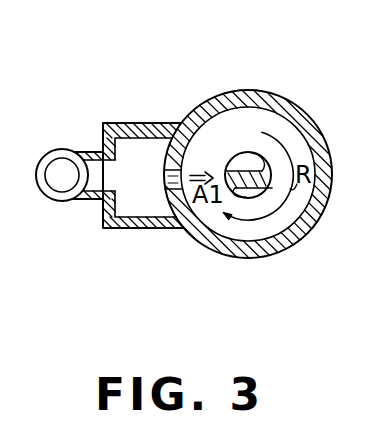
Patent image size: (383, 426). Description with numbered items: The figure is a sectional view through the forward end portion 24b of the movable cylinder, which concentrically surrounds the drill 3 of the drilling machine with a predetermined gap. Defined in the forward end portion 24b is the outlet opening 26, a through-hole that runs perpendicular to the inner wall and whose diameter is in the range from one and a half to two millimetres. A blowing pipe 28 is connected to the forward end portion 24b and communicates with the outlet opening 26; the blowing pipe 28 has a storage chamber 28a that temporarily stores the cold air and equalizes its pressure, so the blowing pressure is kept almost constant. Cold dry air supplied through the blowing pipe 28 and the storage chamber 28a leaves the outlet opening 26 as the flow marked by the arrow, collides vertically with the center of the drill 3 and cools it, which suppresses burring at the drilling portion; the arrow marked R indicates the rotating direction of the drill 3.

The forward end portion 24b is at (272, 93).
The outlet opening 26 is at (167, 185).
The blowing pipe 28 is at (55, 202).
The storage chamber 28a is at (138, 207).
The drill 3 is at (268, 169).